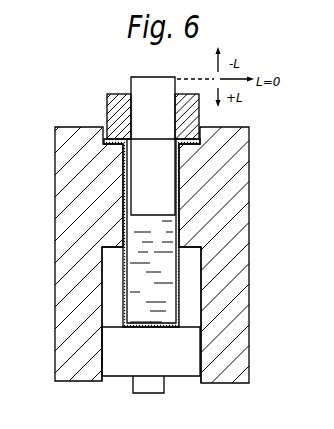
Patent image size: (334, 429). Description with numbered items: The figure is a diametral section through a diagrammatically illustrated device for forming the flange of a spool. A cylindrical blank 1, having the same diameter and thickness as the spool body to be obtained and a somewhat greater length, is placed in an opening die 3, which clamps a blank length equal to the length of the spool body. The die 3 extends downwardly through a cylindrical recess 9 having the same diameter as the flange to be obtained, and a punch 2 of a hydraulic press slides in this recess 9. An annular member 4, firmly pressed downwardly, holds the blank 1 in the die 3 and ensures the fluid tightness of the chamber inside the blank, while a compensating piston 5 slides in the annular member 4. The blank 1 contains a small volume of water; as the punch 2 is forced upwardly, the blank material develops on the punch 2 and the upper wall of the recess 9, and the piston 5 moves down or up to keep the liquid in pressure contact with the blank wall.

The cylindrical blank 1 is at (181, 233).
The punch 2 is at (183, 352).
The opening die 3 is at (68, 211).
The annular member 4 is at (114, 108).
The compensating piston 5 is at (150, 87).
The cylindrical recess 9 is at (108, 296).